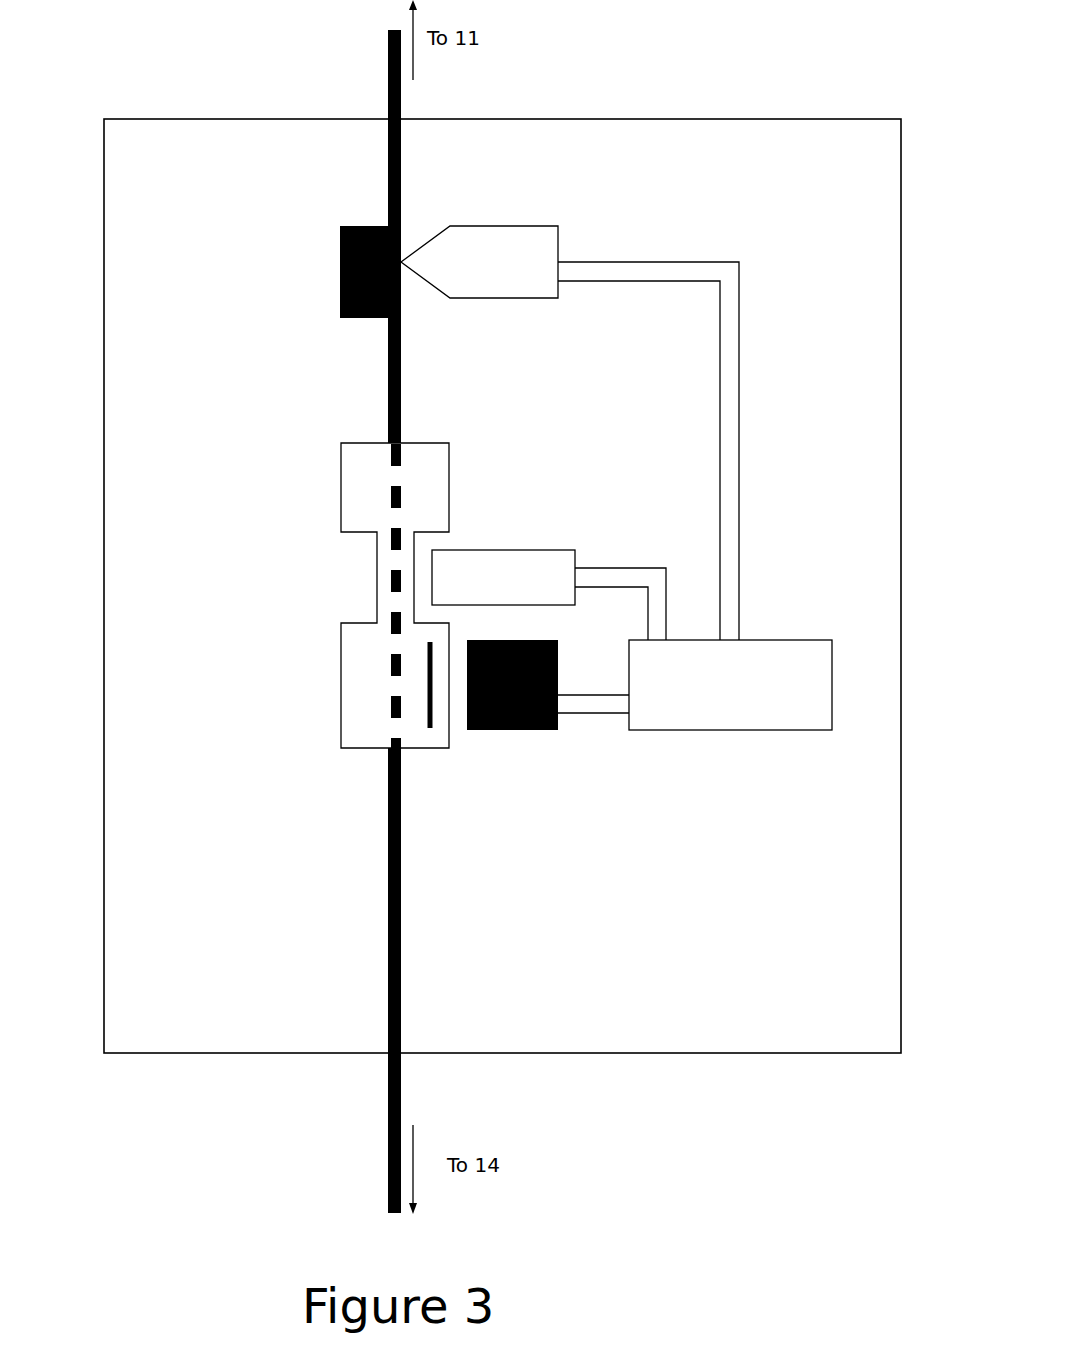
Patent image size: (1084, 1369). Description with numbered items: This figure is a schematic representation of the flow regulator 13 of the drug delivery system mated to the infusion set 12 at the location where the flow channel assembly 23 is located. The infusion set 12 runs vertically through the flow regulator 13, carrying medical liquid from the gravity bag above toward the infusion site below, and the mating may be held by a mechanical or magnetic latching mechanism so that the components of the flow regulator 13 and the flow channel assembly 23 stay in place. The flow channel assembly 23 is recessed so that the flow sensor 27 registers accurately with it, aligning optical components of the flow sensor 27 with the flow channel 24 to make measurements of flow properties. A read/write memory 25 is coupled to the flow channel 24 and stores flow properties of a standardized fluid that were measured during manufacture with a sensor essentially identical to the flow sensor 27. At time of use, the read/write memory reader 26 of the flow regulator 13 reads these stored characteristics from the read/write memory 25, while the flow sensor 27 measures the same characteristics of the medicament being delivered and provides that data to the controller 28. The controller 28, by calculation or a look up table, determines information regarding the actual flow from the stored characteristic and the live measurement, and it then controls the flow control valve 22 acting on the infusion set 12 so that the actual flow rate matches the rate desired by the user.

The infusion set 12 is at (401, 957).
The flow regulator 13 is at (802, 189).
The flow control valve 22 is at (545, 226).
The flow channel assembly 23 is at (322, 484).
The flow channel 24 is at (398, 497).
The read/write memory 25 is at (430, 697).
The read/write memory reader 26 is at (483, 730).
The flow sensor 27 is at (482, 550).
The controller 28 is at (675, 730).